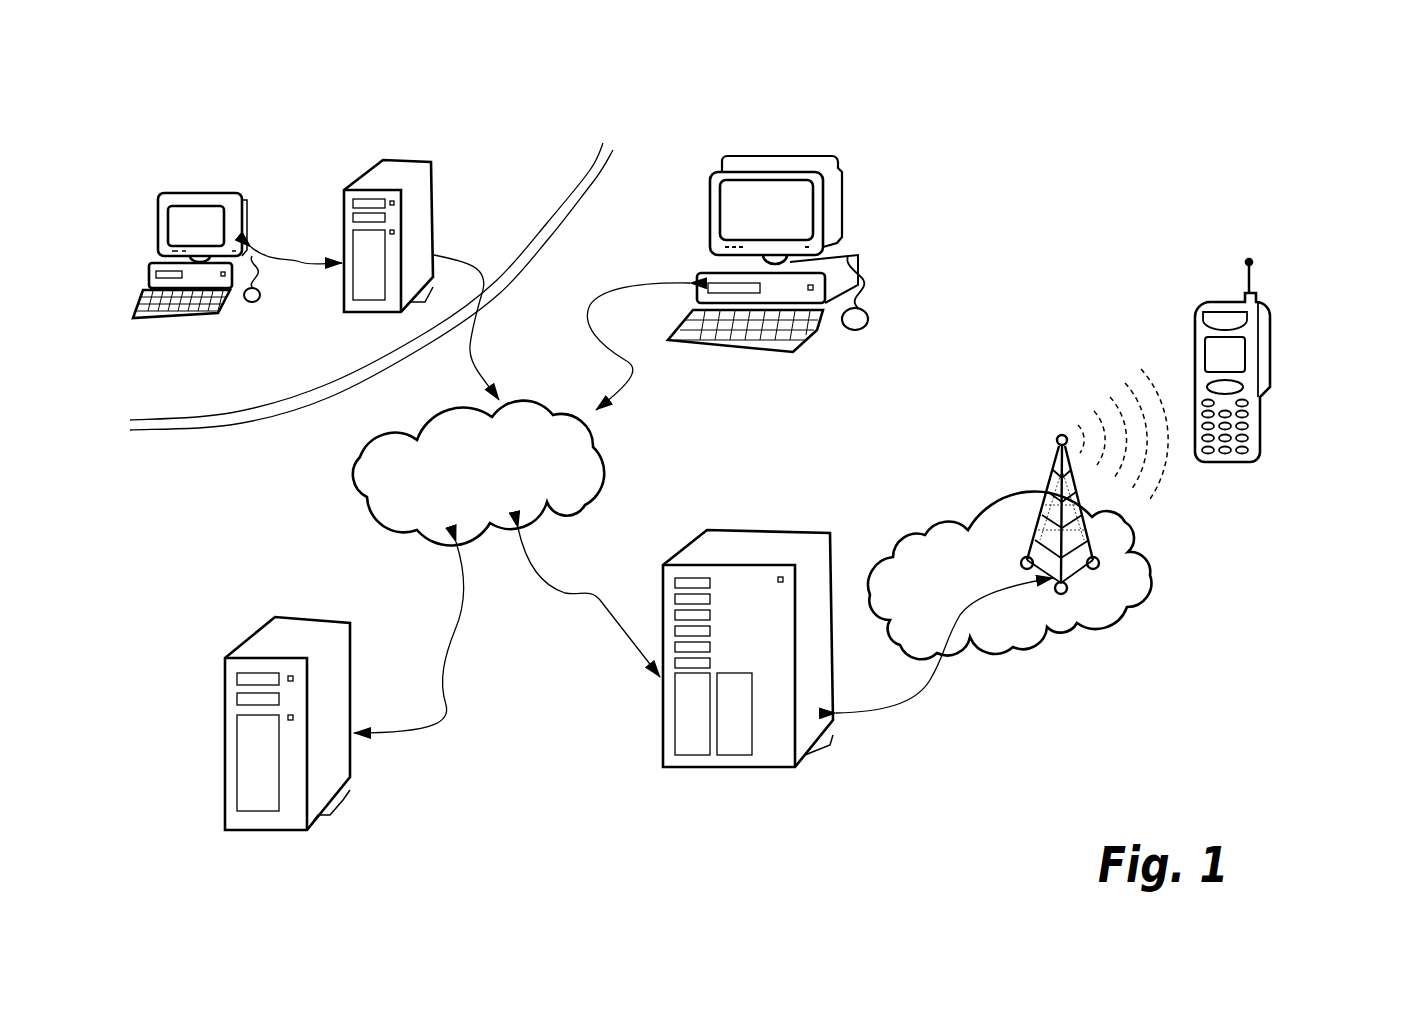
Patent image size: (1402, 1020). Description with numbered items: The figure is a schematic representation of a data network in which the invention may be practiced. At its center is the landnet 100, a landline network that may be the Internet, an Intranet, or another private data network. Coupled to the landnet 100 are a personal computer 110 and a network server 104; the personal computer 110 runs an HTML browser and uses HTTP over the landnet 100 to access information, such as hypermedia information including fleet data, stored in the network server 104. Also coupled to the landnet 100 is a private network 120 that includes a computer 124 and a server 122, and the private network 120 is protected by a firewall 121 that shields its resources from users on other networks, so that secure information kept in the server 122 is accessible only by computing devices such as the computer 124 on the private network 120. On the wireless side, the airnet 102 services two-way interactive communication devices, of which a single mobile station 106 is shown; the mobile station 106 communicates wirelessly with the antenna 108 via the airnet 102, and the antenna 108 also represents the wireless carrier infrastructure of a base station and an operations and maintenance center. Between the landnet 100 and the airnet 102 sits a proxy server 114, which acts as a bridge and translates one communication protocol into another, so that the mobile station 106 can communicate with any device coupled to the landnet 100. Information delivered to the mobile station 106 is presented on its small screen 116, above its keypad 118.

The landnet 100 is at (610, 452).
The airnet 102 is at (1000, 532).
The network server 104 is at (332, 694).
The mobile station 106 is at (1282, 346).
The antenna 108 is at (1055, 455).
The personal computer 110 is at (848, 258).
The proxy server 114 is at (738, 548).
The small screen 116 is at (1232, 357).
The keypad 118 is at (1230, 407).
The private network 120 is at (525, 168).
The firewall 121 is at (617, 140).
The server 122 is at (388, 177).
The computer 124 is at (183, 204).